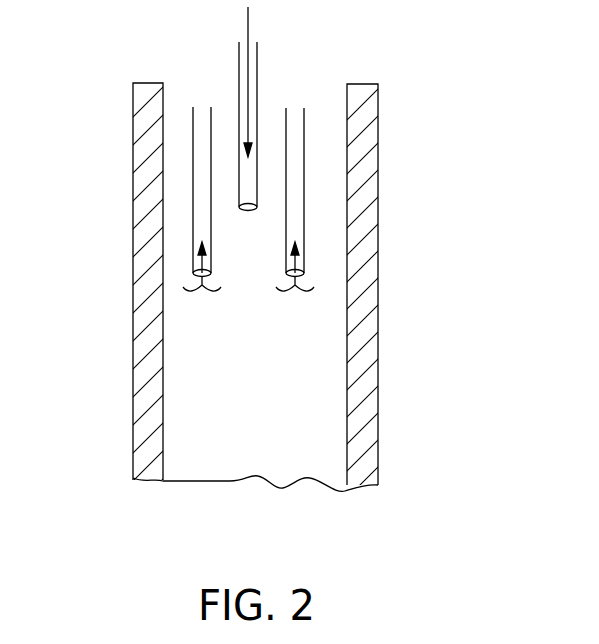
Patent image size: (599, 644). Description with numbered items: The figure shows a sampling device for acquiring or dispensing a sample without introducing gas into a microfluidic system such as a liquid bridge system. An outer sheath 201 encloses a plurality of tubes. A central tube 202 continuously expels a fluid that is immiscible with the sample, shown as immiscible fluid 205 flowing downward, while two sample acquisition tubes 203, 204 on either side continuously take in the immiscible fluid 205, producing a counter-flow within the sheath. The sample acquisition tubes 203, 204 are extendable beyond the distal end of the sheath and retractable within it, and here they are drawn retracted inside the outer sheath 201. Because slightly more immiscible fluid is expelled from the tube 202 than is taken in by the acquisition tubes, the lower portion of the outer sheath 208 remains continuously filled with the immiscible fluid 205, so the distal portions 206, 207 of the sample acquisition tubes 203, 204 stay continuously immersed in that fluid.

The outer sheath 201 is at (133, 168).
The tube 202 is at (257, 75).
The sample acquisition tube 203 is at (304, 126).
The sample acquisition tube 204 is at (193, 115).
The immiscible fluid 205 is at (246, 14).
The distal portion of sample acquisition tube 206 is at (304, 229).
The distal portion of sample acquisition tube 207 is at (193, 234).
The lower portion of the outer sheath 208 is at (283, 473).